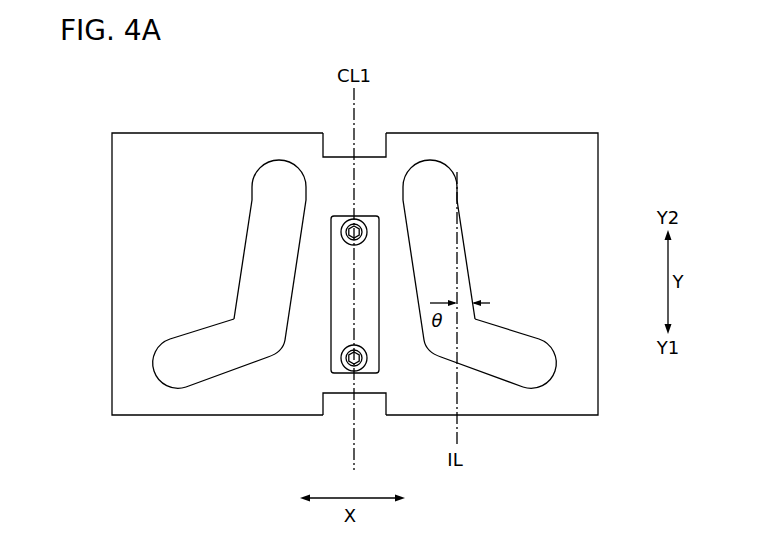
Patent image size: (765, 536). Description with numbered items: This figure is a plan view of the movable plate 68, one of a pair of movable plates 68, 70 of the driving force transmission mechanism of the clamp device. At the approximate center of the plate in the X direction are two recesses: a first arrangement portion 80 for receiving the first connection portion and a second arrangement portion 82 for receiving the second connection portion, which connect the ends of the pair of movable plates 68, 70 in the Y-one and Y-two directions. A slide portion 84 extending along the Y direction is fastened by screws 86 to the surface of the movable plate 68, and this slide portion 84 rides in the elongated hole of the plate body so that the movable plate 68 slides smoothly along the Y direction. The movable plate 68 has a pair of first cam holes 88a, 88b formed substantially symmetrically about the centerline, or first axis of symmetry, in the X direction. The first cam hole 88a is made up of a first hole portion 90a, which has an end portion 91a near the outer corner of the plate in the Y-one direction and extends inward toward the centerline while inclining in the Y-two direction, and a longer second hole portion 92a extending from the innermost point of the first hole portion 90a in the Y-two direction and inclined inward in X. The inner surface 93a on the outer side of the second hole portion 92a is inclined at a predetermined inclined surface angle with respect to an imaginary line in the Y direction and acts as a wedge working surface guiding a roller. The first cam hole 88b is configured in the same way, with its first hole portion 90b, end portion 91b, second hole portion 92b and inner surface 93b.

The movable plate 68 is at (533, 125).
The movable plate 70 is at (355, 243).
The first arrangement portion 80 is at (368, 407).
The second arrangement portion 82 is at (366, 147).
The slide portion 84 is at (323, 352).
The screw 86 is at (366, 358).
The first cam hole 88a is at (495, 310).
The first cam hole 88b is at (213, 310).
The first hole portion 90a is at (481, 327).
The first hole portion 90b is at (199, 338).
The end portion 91a is at (530, 399).
The end portion 91b is at (175, 374).
The second hole portion 92a is at (467, 270).
The second hole portion 92b is at (265, 237).
The inner surface 93a is at (467, 186).
The inner surface 93b is at (248, 212).